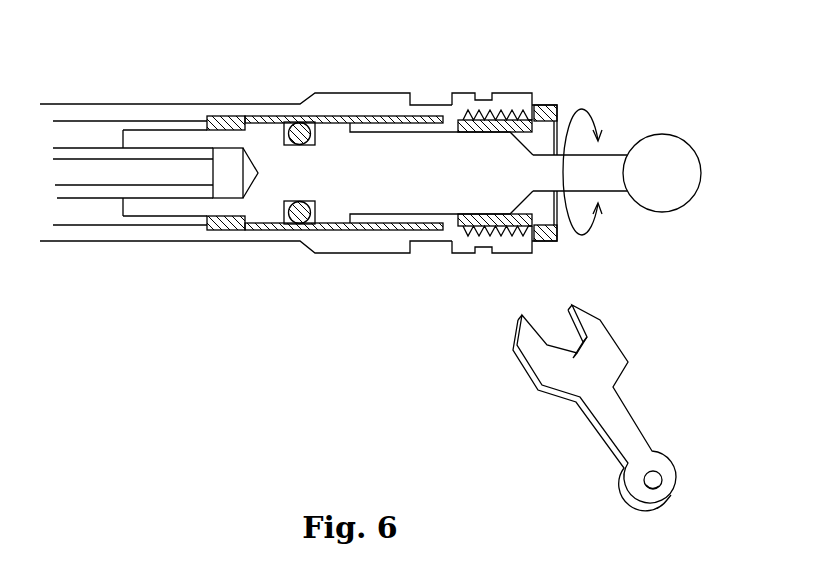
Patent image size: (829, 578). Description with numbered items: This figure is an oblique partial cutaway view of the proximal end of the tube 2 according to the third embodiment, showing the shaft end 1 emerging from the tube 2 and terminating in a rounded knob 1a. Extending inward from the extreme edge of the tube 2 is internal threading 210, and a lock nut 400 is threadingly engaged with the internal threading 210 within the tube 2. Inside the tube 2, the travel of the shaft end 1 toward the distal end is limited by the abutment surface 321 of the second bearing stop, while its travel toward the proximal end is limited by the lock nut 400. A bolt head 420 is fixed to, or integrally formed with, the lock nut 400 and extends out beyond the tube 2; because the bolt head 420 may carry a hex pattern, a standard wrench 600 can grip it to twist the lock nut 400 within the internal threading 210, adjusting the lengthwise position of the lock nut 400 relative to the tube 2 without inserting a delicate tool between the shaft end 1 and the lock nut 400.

The shaft end 1 is at (610, 157).
The knob of handle 1a is at (703, 172).
The tube 2 is at (367, 241).
The internal threading 210 is at (494, 108).
The abutment surface 321 is at (253, 218).
The lock nut 400 is at (467, 224).
The bolt head 420 is at (560, 231).
The wrench 600 is at (623, 418).